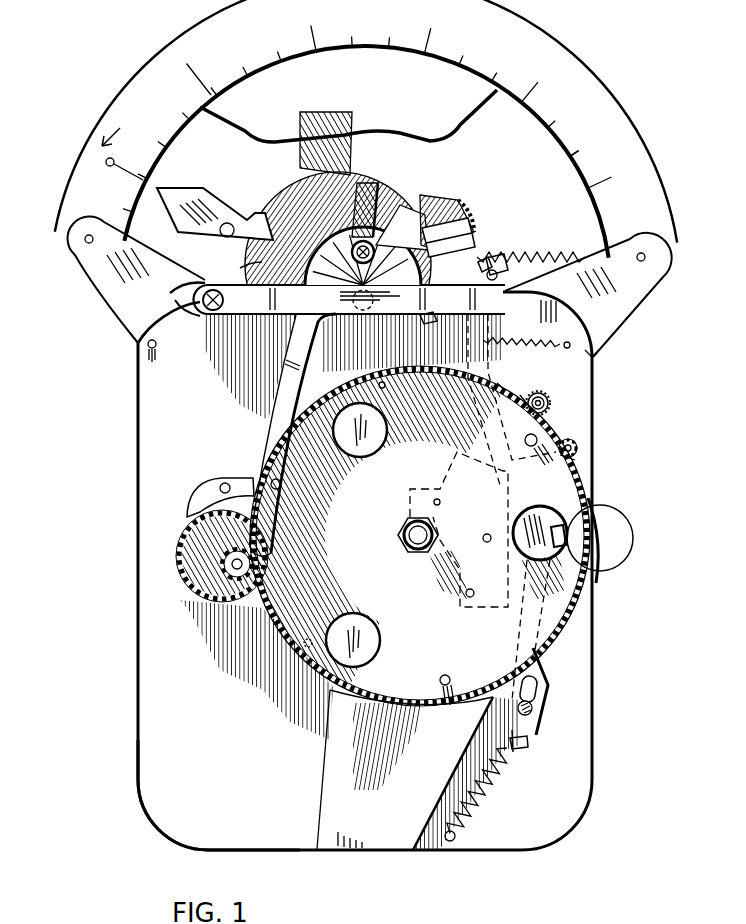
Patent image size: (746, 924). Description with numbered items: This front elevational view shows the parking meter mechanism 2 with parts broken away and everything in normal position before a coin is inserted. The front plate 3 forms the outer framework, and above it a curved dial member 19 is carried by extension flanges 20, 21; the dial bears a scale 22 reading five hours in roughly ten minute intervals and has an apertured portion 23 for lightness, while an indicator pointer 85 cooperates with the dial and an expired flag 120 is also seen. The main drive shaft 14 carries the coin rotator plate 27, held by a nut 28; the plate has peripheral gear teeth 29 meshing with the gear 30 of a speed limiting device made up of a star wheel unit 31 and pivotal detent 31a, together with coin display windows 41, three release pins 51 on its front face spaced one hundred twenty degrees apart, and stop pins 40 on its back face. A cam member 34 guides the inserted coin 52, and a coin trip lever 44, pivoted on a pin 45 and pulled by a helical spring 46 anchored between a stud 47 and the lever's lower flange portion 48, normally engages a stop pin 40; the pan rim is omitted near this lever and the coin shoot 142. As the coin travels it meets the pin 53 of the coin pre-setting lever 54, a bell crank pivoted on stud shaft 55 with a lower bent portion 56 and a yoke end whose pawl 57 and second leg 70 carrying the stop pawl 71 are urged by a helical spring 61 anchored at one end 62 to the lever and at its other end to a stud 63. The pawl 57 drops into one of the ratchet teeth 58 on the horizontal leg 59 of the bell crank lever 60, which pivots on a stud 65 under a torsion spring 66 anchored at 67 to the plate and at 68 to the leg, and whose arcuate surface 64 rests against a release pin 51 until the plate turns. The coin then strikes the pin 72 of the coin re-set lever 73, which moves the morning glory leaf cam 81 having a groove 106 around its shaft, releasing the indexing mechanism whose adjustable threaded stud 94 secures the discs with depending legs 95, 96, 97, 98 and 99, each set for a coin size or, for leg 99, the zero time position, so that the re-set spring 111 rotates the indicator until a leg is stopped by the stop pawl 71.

The parking meter mechanism 2 is at (603, 775).
The front plate 3 is at (141, 772).
The main drive shaft 14 is at (412, 540).
The dial member 19 is at (600, 93).
The extension flange 20 is at (90, 262).
The extension flange 21 is at (645, 280).
The scale 22 is at (667, 183).
The cutaway or apertured portion 23 is at (574, 160).
The coin propelling plate or rotator 27 is at (307, 683).
The nut 28 is at (400, 535).
The gear teeth 29 is at (523, 395).
The gear 30 is at (230, 580).
The star wheel type unit 31 is at (185, 583).
The pivotal detent 31a is at (197, 490).
The cam member 34 is at (410, 500).
The hook or pin 40 is at (597, 581).
The apertures 41 is at (378, 645).
The coin trip lever 44 is at (540, 678).
The pin 45 is at (533, 708).
The helical spring 46 is at (475, 803).
The stud 47 is at (456, 835).
The lower flange portion 48 is at (530, 748).
The pins or studs 51 is at (537, 441).
The coin 52 is at (620, 537).
The pin 53 is at (578, 448).
The coin pre-setting lever 54 is at (475, 357).
The stud shaft 55 is at (499, 385).
The lower bent portion 56 is at (575, 460).
The flange or pawl 57 is at (498, 274).
The ratchet teeth 58 is at (375, 299).
The leg 59 is at (203, 283).
The bell crank lever 60 is at (268, 418).
The helical spring 61 is at (563, 346).
The end 62 is at (490, 340).
The stud 63 is at (595, 357).
The arcuate surface 64 is at (270, 484).
The stud 65 is at (205, 310).
The torsion spring 66 is at (135, 323).
The anchor point 67 is at (153, 348).
The anchor point 68 is at (350, 352).
The second leg 70 is at (492, 262).
The flange or stud 71 is at (498, 254).
The outwardly depending pin 72 is at (545, 399).
The coin re-set lever 73 is at (547, 412).
The leaf cam 81 is at (398, 172).
The indicator pointer 85 is at (200, 188).
The adjustable threaded stud 94 is at (380, 230).
The depending leg portion 95 is at (240, 268).
The depending leg portion 96 is at (370, 168).
The depending leg portion 97 is at (432, 195).
The depending leg portion 98 is at (465, 210).
The stop leg 99 is at (468, 230).
The recess or groove 106 is at (328, 252).
The re-set spring 111 is at (556, 258).
The expired flag 120 is at (257, 143).
The coin shoot 142 is at (333, 792).